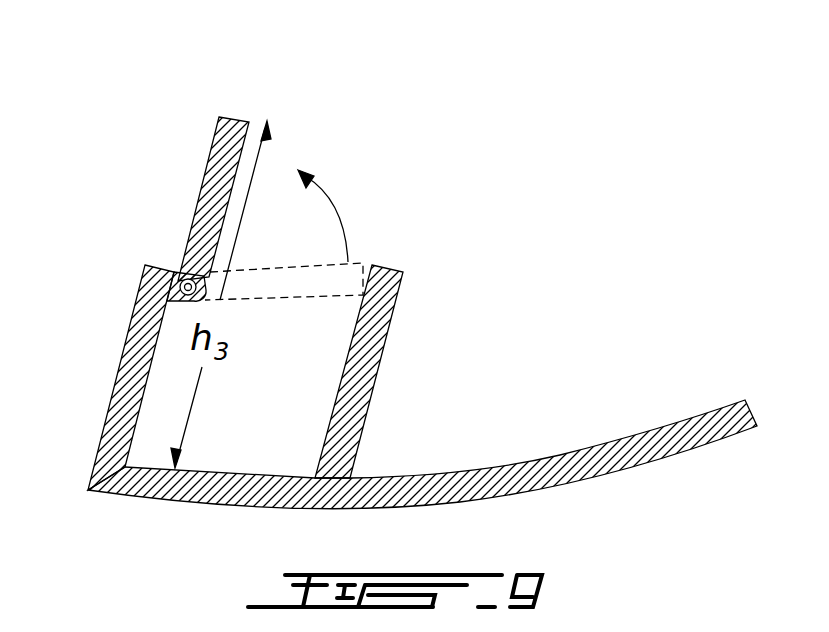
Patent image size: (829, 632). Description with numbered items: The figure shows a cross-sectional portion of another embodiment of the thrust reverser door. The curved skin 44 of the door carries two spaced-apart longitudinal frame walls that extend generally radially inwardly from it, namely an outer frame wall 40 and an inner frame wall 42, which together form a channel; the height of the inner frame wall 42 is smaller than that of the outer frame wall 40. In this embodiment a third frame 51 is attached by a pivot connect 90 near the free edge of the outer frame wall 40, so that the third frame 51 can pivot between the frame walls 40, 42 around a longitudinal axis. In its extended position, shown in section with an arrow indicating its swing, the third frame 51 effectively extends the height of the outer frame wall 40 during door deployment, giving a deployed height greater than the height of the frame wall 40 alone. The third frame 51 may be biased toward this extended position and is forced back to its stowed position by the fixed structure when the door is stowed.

The outer frame wall 40 is at (162, 263).
The inner frame wall 42 is at (388, 263).
The skin 44 is at (530, 467).
The third frame 51 is at (230, 117).
The pivot connect 90 is at (180, 285).